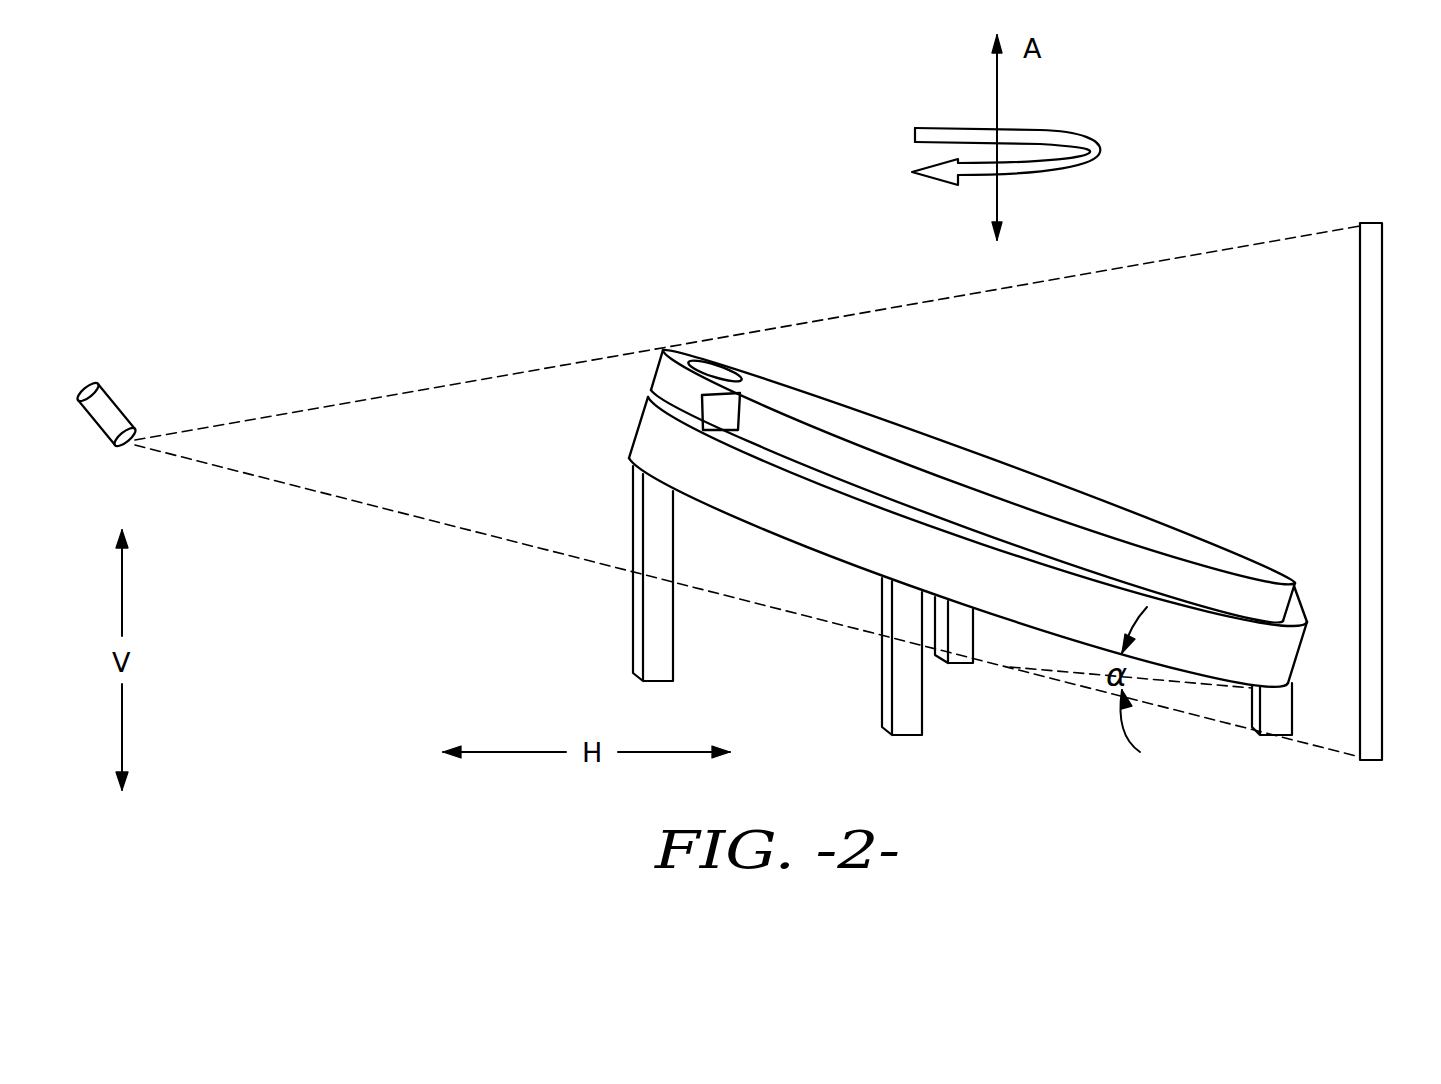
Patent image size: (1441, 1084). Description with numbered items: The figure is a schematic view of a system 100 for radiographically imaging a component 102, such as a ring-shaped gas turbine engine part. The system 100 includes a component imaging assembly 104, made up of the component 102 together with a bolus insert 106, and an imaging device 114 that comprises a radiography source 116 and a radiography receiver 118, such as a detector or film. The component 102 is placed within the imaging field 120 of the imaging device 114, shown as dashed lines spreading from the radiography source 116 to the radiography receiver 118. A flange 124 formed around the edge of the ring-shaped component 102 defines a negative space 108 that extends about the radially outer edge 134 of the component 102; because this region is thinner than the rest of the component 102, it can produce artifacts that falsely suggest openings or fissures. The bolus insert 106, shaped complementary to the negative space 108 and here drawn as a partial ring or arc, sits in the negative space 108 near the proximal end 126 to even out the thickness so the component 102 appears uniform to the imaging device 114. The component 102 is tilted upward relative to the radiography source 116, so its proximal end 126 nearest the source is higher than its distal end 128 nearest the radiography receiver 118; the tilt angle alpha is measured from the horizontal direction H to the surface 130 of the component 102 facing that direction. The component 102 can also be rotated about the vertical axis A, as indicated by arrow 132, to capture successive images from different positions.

The system 100 is at (295, 198).
The component 102 is at (948, 450).
The component imaging assembly 104 is at (493, 287).
The bolus insert 106 is at (681, 354).
The negative space 108 is at (1302, 603).
The imaging device 114 is at (187, 330).
The radiography source 116 is at (100, 406).
The radiography receiver 118 is at (1368, 317).
The imaging field 120 is at (935, 338).
The flange 124 is at (934, 600).
The proximal end 126 is at (641, 337).
The distal end 128 is at (1312, 660).
The surface 130 is at (1038, 632).
The arrow 132 is at (1043, 138).
The radially outer edge 134 is at (637, 425).